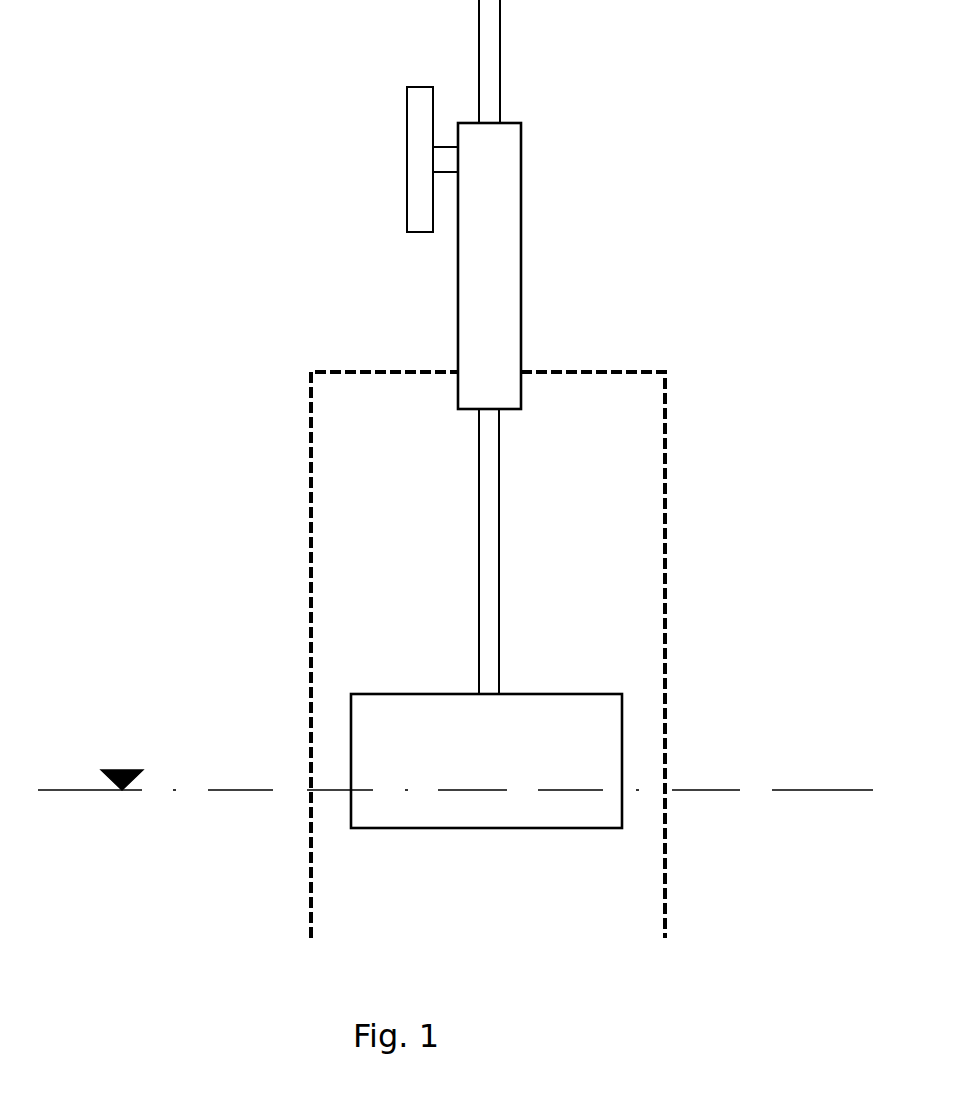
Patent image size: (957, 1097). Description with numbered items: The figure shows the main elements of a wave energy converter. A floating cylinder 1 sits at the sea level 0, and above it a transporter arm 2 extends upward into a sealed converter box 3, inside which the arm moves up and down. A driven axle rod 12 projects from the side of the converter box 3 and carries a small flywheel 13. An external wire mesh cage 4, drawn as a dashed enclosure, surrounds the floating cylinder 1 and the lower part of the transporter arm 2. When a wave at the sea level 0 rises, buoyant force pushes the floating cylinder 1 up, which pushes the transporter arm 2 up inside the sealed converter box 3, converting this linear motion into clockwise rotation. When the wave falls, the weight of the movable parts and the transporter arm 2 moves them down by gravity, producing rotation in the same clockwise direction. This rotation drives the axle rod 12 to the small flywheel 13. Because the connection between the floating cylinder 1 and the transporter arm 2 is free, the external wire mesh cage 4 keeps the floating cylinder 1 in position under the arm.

The sea level 0 is at (247, 790).
The floating cylinder 1 is at (382, 694).
The transporter arm 2 is at (499, 542).
The sealed converter box 3 is at (521, 220).
The external wire mesh cage 4 is at (665, 543).
The driven axle rod 12 is at (443, 160).
The small flywheel 13 is at (418, 123).